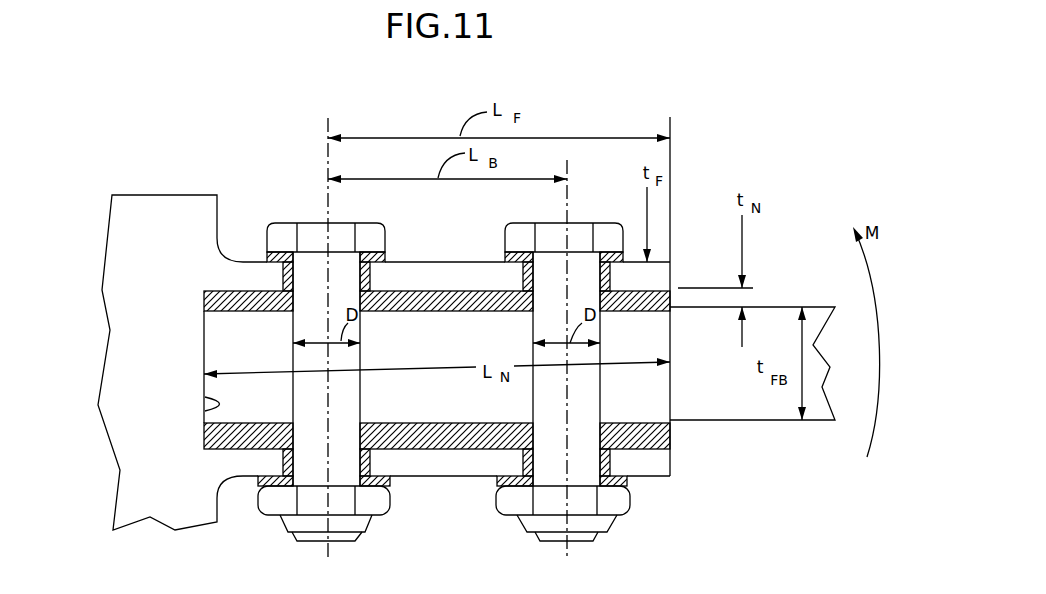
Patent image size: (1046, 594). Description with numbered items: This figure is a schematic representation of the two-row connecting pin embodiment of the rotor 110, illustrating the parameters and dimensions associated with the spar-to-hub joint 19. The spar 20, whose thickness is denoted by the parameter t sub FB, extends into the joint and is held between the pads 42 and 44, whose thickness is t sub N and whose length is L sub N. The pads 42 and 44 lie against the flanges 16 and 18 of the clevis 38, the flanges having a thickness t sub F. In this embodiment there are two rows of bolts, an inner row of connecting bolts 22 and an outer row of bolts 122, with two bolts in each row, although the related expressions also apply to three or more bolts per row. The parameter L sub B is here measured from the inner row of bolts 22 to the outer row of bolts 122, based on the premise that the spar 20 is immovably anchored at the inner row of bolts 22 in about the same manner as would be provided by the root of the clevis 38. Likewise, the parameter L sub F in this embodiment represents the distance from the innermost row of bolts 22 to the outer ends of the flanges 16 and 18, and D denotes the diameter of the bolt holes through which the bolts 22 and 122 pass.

The rotor 110 is at (193, 155).
The spar-to-hub joint 19 is at (746, 172).
The connecting bolt 22 is at (333, 237).
The bolt 122 is at (572, 238).
The pad 42 is at (447, 290).
The pad 44 is at (443, 452).
The flange 16 is at (660, 278).
The flange 18 is at (662, 465).
The spar 20 is at (818, 368).
The clevis 38 is at (205, 409).